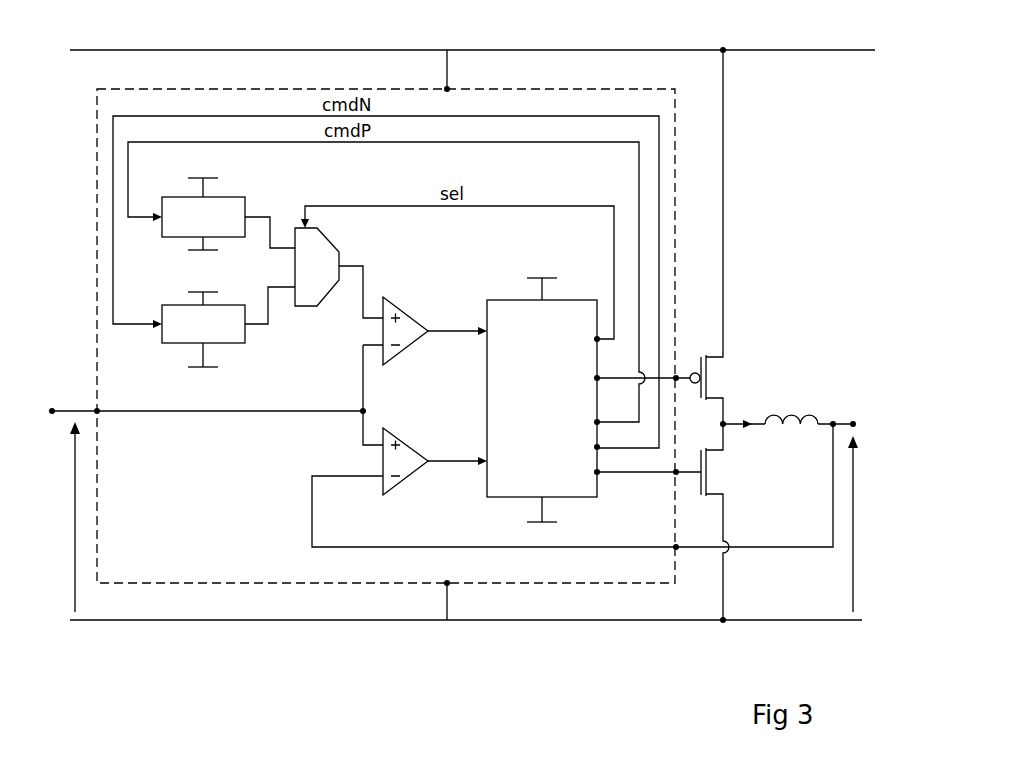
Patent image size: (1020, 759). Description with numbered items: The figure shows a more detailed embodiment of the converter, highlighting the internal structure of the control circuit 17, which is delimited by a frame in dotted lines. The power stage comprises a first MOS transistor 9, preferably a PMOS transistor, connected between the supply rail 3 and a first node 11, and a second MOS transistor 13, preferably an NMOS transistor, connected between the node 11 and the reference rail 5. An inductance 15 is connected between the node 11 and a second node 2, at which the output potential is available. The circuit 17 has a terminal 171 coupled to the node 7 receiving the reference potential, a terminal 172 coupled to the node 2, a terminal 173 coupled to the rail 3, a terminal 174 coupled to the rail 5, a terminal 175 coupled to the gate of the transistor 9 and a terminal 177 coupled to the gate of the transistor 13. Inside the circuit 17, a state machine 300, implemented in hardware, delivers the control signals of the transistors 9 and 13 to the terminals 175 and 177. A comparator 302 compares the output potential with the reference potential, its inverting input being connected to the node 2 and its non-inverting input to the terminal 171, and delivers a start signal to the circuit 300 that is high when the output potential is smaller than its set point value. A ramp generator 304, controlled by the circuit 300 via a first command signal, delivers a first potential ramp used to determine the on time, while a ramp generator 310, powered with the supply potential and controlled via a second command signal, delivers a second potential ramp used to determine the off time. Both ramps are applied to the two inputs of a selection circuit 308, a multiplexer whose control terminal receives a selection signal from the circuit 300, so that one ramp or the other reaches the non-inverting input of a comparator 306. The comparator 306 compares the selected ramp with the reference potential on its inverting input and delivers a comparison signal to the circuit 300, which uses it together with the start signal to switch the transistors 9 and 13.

The node 2 is at (854, 418).
The rail 3 is at (792, 50).
The rail 5 is at (782, 622).
The node 7 is at (52, 408).
The first MOS transistor 9 is at (714, 378).
The node 11 is at (727, 422).
The second MOS transistor 13 is at (717, 470).
The inductance 15 is at (790, 420).
The circuit 17 is at (636, 89).
The terminal 171 is at (97, 411).
The terminal 172 is at (676, 549).
The terminal 173 is at (447, 89).
The terminal 174 is at (447, 583).
The terminal 175 is at (676, 376).
The terminal 177 is at (676, 474).
The state machine 300 is at (543, 399).
The comparator 302 is at (407, 468).
The ramp generator 304 is at (228, 216).
The comparator 306 is at (416, 322).
The selection circuit 308 is at (325, 246).
The ramp generator 310 is at (228, 331).